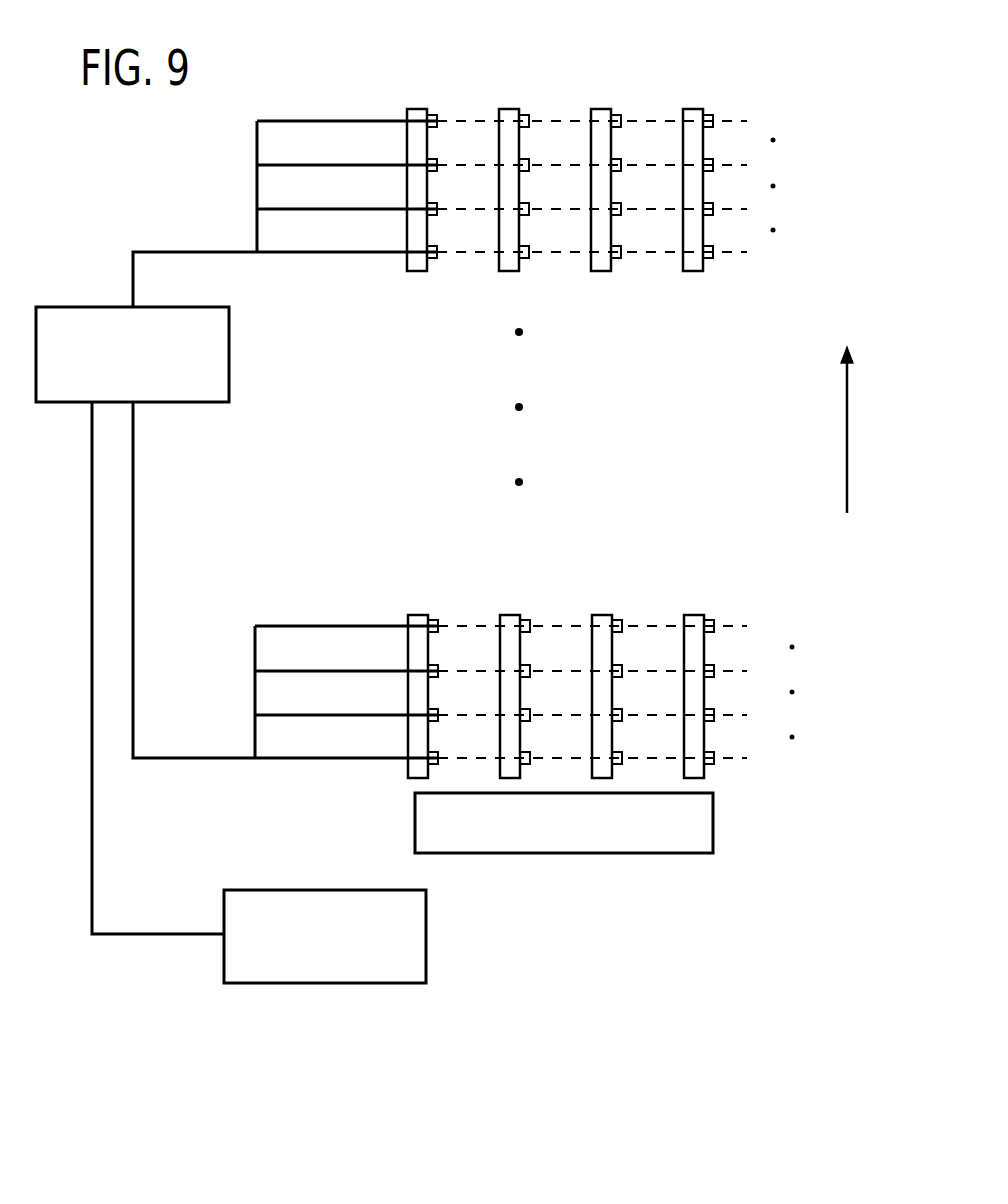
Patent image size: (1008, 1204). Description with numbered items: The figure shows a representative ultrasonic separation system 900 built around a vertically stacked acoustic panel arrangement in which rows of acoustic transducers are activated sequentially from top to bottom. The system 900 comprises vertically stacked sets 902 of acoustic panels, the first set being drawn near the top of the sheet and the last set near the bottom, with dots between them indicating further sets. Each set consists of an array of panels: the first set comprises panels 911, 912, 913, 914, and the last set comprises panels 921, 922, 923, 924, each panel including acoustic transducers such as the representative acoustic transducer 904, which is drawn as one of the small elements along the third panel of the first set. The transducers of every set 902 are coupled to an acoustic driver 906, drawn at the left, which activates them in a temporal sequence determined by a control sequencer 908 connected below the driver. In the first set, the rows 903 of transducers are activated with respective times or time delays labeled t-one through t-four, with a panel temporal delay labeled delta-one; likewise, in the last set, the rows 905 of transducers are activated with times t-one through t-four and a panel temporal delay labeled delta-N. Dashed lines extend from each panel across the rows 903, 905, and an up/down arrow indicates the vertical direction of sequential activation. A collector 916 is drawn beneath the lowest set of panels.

The separation system 900 is at (733, 978).
The set of acoustic panels 902 is at (677, 311).
The row of transducers 903 is at (627, 188).
The acoustic transducer 904 is at (617, 258).
The row of transducers 905 is at (633, 694).
The acoustic driver 906 is at (60, 307).
The control sequencer 908 is at (426, 915).
The panel 911 is at (408, 109).
The panel 912 is at (513, 109).
The panel 913 is at (608, 176).
The panel 914 is at (701, 109).
The collector 916 is at (570, 853).
The panel 921 is at (421, 620).
The panel 922 is at (513, 615).
The panel 923 is at (598, 615).
The panel 924 is at (702, 615).